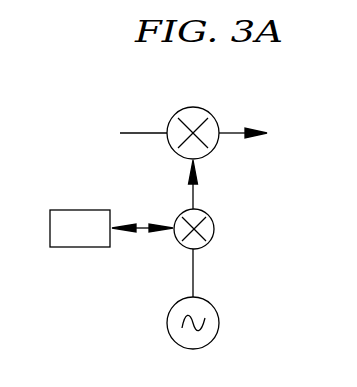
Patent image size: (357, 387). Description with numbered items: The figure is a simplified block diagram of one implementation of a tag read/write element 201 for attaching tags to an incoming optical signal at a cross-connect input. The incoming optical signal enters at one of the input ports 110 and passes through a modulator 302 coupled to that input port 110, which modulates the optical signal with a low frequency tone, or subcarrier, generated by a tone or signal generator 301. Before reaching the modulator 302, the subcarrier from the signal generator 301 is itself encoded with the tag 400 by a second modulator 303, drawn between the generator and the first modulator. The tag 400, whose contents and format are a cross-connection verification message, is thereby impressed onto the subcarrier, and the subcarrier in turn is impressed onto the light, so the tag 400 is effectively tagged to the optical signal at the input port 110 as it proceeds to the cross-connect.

The tag read/write element 201 is at (211, 78).
The input port 110 is at (145, 130).
The modulator 302 is at (213, 116).
The modulator 303 is at (215, 228).
The tone or signal generator 301 is at (221, 322).
The tag 400 is at (82, 209).